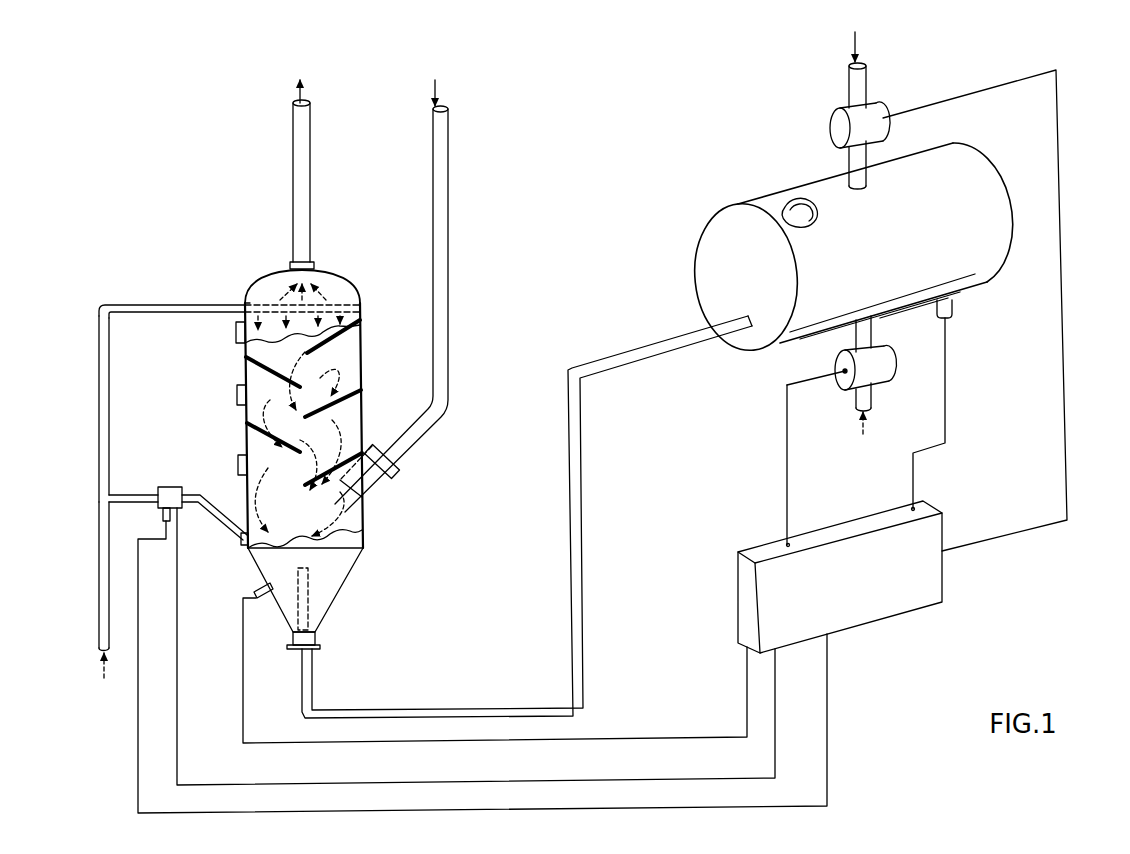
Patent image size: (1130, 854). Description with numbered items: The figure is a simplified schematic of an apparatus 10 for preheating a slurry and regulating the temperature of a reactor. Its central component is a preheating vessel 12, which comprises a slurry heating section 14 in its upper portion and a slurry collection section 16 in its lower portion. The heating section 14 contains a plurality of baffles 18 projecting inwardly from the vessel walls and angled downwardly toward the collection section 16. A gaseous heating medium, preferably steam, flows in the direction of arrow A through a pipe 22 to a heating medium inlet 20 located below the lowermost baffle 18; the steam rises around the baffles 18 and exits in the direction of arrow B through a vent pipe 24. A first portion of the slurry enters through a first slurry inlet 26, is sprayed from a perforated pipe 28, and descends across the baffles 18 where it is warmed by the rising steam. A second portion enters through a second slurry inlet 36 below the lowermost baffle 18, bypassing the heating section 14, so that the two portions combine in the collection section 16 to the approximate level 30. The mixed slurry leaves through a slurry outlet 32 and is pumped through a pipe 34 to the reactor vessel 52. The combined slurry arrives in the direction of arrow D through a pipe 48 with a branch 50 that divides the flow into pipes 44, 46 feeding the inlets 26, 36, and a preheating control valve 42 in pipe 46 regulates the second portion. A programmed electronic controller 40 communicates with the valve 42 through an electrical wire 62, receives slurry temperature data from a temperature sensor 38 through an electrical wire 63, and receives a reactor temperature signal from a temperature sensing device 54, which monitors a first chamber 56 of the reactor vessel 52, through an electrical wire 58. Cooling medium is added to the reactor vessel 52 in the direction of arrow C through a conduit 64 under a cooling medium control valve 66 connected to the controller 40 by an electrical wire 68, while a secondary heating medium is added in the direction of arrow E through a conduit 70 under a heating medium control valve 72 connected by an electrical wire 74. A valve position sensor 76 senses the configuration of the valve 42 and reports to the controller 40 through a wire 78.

The apparatus 10 is at (848, 684).
The preheating vessel 12 is at (240, 428).
The slurry heating section 14 is at (362, 373).
The slurry collection section 16 is at (348, 571).
The baffles 18 is at (326, 335).
The heating medium inlet 20 is at (386, 506).
The pipe 22 is at (448, 220).
The vent pipe 24 is at (310, 178).
The first slurry inlet 26 is at (245, 304).
The perforated pipe 28 is at (360, 300).
The level of collected slurry 30 is at (363, 548).
The slurry outlet 32 is at (320, 646).
The pipe 34 is at (312, 672).
The second slurry inlet 36 is at (240, 538).
The temperature sensor 38 is at (263, 603).
The programmed electronic controller 40 is at (942, 600).
The preheating control valve 42 is at (170, 487).
The pipe 44 is at (136, 312).
The pipe 46 is at (138, 494).
The pipe 48 is at (99, 588).
The branch 50 is at (99, 498).
The reactor vessel 52 is at (708, 248).
The temperature sensing device 54 is at (952, 310).
The first chamber 56 is at (791, 201).
The electrical wire 58 is at (946, 410).
The electrical wire 62 is at (177, 670).
The electrical wire 63 is at (243, 670).
The conduit 64 is at (850, 95).
The cooling medium control valve 66 is at (831, 125).
The electrical wire 68 is at (1061, 226).
The conduit 70 is at (872, 332).
The heating medium control valve 72 is at (803, 380).
The electrical wire 74 is at (787, 442).
The valve position sensor 76 is at (163, 516).
The wire 78 is at (827, 770).